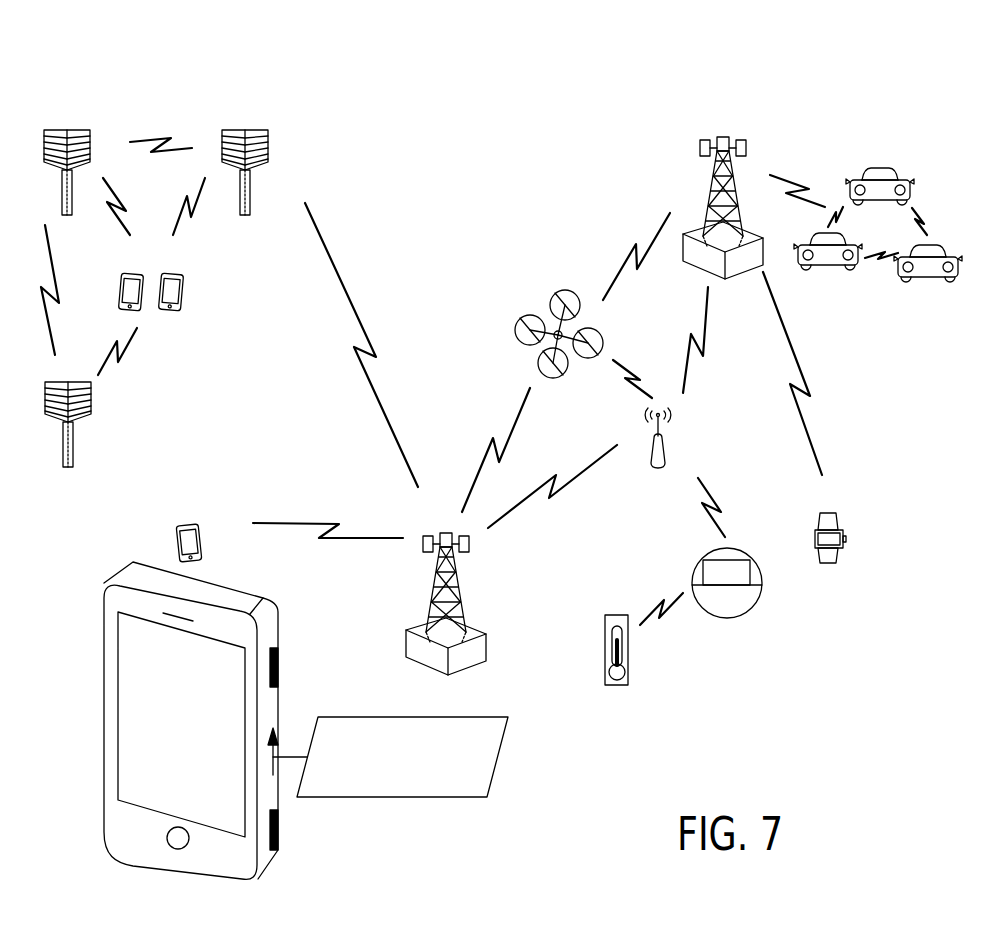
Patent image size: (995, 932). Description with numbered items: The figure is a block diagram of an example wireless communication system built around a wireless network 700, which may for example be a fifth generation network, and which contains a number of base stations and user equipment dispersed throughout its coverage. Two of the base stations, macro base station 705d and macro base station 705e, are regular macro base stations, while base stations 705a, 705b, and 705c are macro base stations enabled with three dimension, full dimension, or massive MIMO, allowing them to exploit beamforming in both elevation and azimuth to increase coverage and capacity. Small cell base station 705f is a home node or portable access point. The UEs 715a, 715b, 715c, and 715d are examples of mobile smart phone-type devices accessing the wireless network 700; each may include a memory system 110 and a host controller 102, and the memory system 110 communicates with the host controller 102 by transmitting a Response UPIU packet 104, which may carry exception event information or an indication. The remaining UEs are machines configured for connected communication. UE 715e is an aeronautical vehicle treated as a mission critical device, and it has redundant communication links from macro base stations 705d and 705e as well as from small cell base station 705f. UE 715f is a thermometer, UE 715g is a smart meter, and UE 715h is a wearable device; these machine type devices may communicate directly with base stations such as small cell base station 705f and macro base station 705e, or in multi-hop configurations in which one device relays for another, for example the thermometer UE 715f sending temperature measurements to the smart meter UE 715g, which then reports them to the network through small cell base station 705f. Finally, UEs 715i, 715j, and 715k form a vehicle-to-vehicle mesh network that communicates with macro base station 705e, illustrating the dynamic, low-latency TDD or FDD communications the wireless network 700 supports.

The wireless network 700 is at (541, 92).
The base station 705a is at (72, 183).
The base station 705b is at (249, 196).
The base station 705c is at (74, 450).
The macro base station 705d is at (487, 641).
The macro base station 705e is at (692, 266).
The small cell base station 705f is at (658, 470).
The UE 715a is at (120, 290).
The UE 715b is at (183, 295).
The UE 715c is at (178, 545).
The UE 715d is at (233, 590).
The UE 715e is at (515, 330).
The UE 715f is at (615, 688).
The UE 715g is at (727, 619).
The UE 715h is at (828, 565).
The UE 715i is at (880, 167).
The UE 715j is at (928, 282).
The UE 715k is at (824, 273).
The host controller 102 is at (279, 672).
The memory system 110 is at (279, 833).
The Response UPIU packet 104 is at (457, 798).